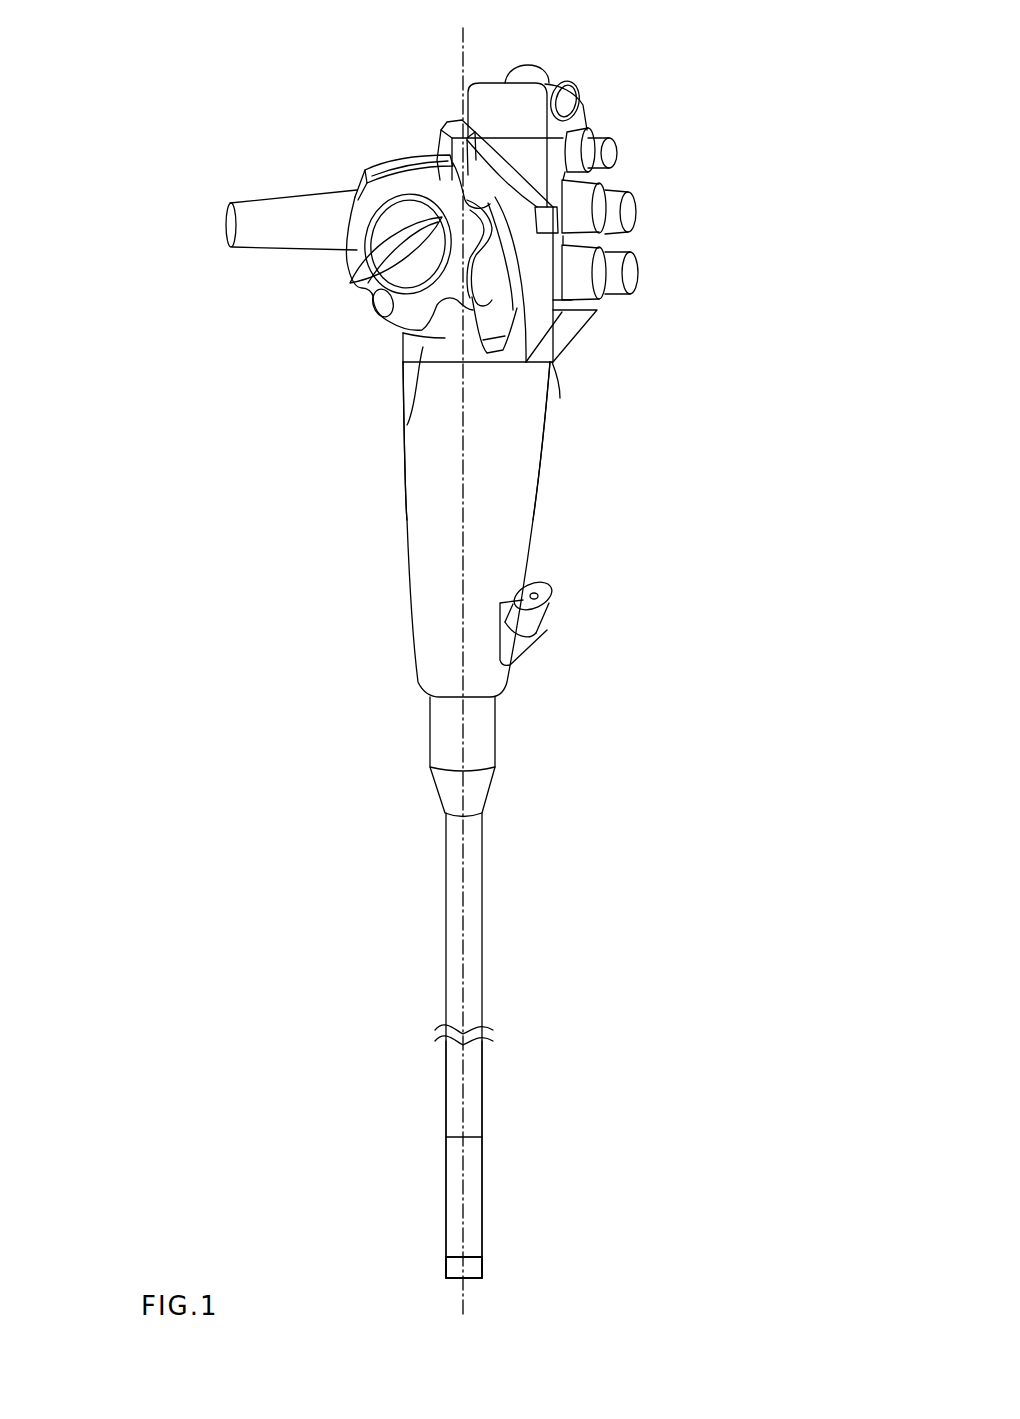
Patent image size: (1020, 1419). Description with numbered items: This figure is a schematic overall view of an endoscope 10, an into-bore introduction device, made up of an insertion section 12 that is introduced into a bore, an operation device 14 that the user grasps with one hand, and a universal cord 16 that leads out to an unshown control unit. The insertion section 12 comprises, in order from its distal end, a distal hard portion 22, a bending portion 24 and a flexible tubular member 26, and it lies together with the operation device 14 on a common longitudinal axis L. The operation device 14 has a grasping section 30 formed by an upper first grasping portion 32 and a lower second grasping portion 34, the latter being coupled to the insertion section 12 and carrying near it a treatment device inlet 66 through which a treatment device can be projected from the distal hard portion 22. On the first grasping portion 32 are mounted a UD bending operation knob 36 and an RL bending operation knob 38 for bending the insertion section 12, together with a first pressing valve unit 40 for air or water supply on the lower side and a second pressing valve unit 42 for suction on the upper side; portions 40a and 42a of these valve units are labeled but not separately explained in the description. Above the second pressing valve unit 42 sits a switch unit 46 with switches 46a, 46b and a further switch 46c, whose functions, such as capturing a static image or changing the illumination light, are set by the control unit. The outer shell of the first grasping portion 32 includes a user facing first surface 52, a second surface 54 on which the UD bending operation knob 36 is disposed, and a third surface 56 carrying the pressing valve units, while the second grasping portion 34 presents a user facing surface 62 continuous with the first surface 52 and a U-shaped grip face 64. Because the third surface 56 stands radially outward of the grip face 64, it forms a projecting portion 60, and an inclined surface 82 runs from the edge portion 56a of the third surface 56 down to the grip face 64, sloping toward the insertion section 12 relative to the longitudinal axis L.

The endoscope 10 is at (482, 670).
The insertion section 12 is at (404, 1049).
The operation device 14 is at (313, 437).
The universal cord 16 is at (270, 199).
The distal hard portion 22 is at (483, 1268).
The bending portion 24 is at (483, 1197).
The tubular member 26 is at (483, 1090).
The grasping section 30 is at (388, 375).
The first grasping portion 32 is at (403, 340).
The second grasping portion 34 is at (406, 540).
The UD bending operation knob 36 is at (455, 122).
The RL bending operation knob 38 is at (358, 185).
The first pressing valve unit 40 is at (660, 262).
The suction button cap 40a is at (638, 276).
The second pressing valve unit 42 is at (657, 190).
The air/water supply button cap 42a is at (637, 212).
The switch unit 46 is at (582, 69).
The switch 46a is at (615, 150).
The switch 46b is at (578, 99).
The switch 46c is at (530, 78).
The first surface 52 is at (403, 352).
The second surface 54 is at (425, 365).
The third surface 56 is at (578, 312).
The edge portion 56a is at (565, 335).
The projecting portion 60 is at (556, 370).
The user facing surface 62 is at (403, 482).
The grip face 64 is at (533, 487).
The treatment device inlet 66 is at (523, 633).
The inclined surface 82 is at (538, 314).
The longitudinal axis L is at (465, 1300).